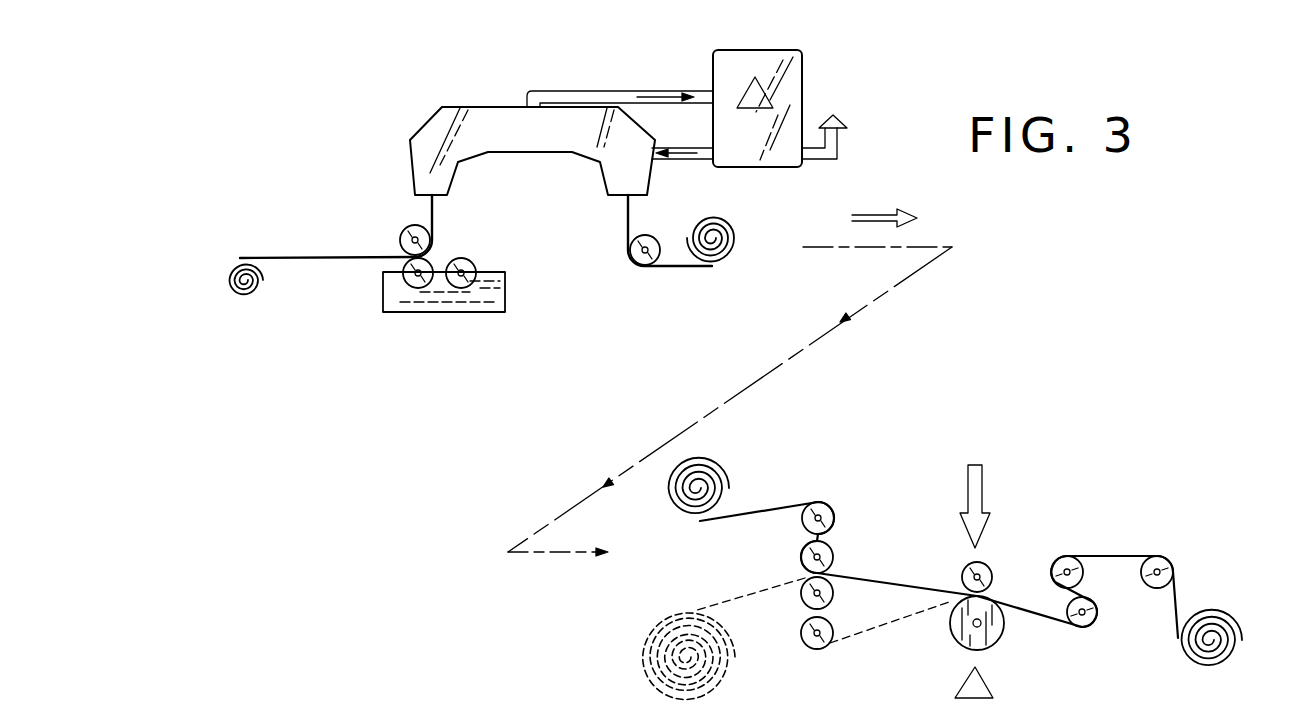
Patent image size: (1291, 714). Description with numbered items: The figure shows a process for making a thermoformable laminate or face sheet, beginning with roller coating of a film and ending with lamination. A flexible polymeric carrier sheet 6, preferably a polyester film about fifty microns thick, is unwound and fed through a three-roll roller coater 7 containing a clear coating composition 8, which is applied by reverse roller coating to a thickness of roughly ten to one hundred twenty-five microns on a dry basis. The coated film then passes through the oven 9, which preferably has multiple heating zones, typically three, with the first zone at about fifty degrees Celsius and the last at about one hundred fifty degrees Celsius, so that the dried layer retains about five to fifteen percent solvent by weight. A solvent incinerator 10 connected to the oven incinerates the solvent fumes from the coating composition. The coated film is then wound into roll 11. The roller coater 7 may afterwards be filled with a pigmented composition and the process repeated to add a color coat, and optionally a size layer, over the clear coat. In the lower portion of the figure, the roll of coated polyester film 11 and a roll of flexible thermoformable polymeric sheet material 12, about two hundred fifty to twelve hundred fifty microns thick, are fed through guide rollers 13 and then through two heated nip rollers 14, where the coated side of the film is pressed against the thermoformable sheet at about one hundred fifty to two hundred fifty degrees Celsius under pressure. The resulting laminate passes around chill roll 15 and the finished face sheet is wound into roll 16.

The flexible polymeric carrier sheet 6 is at (242, 259).
The roller coater 7 is at (483, 263).
The clear coating composition 8 is at (497, 297).
The oven 9 is at (535, 152).
The solvent incinerator 10 is at (808, 40).
The roll 11 is at (742, 247).
The thermoformable polymeric sheet material 12 is at (640, 657).
The guide rollers 13 is at (807, 535).
The heated nip rollers 14 is at (953, 614).
The chill roll 15 is at (1095, 606).
The roll 16 is at (1245, 647).